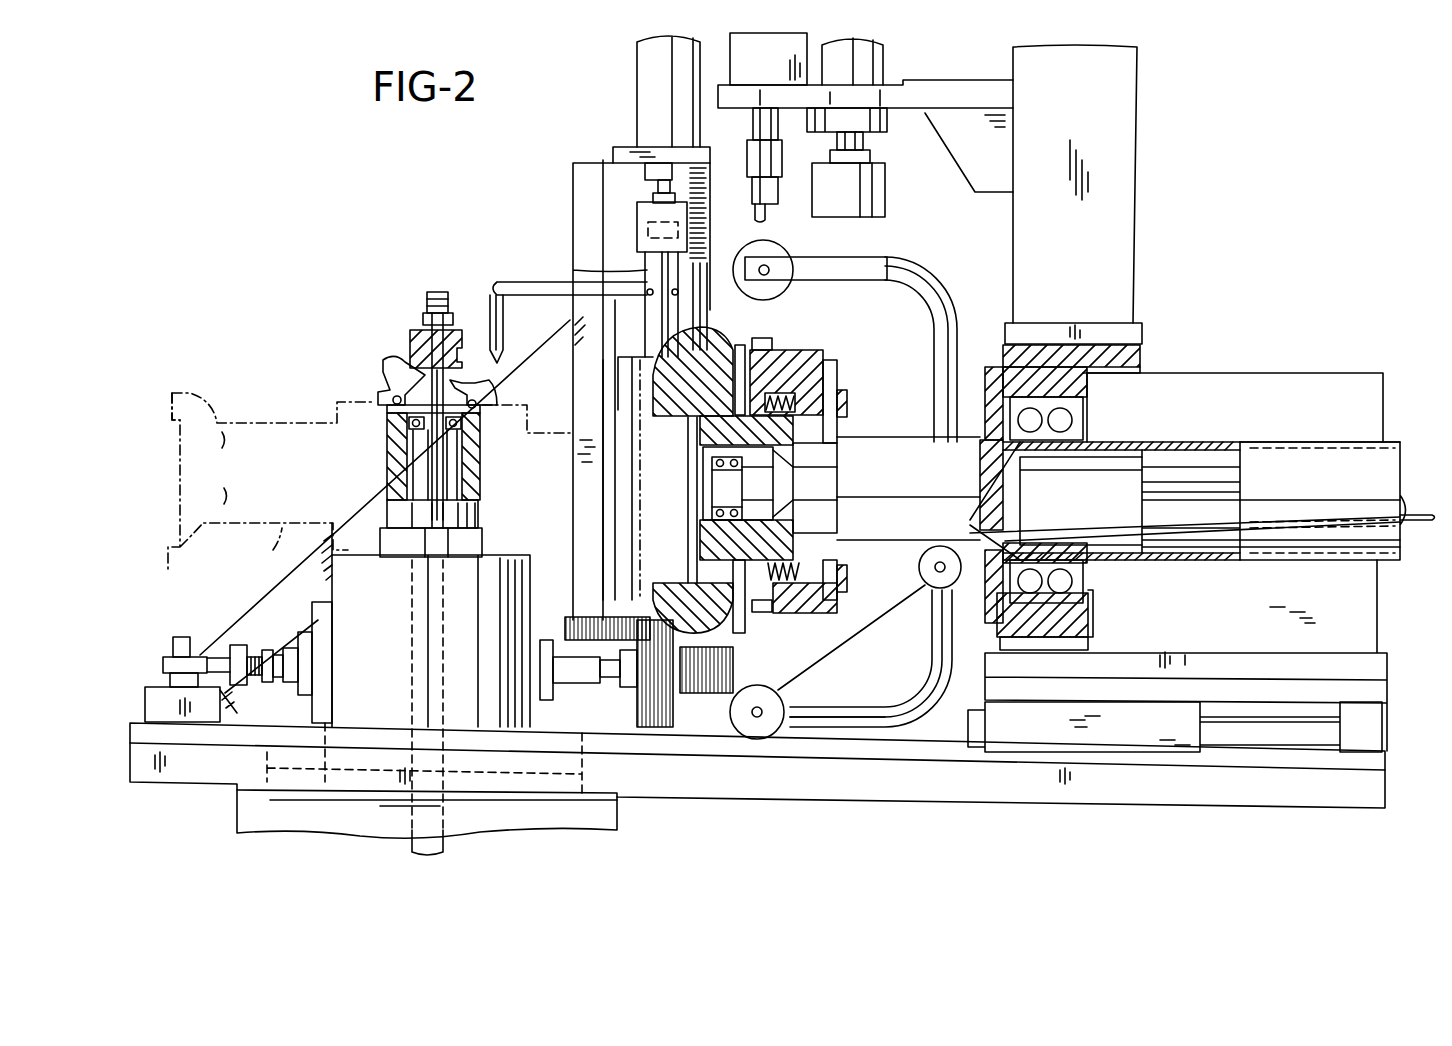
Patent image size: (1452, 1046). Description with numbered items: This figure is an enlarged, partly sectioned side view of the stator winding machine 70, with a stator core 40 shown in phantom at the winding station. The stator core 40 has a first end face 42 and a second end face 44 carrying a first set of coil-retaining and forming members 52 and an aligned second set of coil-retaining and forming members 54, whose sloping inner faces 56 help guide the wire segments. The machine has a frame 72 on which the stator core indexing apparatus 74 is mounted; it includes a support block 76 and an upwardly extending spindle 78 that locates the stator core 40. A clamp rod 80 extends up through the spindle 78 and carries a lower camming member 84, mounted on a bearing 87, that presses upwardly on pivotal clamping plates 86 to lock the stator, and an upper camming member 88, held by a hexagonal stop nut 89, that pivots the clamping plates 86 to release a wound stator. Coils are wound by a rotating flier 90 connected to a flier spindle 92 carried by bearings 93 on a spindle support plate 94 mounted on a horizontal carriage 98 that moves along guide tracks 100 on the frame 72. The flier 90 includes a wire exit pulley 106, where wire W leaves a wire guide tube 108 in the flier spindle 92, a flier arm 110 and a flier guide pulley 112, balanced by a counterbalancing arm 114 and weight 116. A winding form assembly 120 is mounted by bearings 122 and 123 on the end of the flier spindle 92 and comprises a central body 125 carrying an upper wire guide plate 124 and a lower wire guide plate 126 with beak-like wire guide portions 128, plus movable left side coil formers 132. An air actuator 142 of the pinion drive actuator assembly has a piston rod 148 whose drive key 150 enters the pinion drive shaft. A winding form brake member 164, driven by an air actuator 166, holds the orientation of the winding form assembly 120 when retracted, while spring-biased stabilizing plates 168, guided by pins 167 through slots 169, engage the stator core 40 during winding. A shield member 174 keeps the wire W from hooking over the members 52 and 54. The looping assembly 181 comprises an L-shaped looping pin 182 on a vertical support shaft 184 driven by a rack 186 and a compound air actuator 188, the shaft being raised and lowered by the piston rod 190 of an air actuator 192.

The stator core 40 is at (307, 400).
The first end face 42 is at (262, 420).
The second end face 44 is at (270, 552).
The first set of coil-retaining and forming members 52 is at (184, 378).
The second set of coil-retaining and forming members 54 is at (165, 575).
The inner faces 56 is at (218, 468).
The stator winding machine 70 is at (1170, 165).
The frame 72 is at (860, 793).
The stator core indexing apparatus 74 is at (258, 802).
The support block 76 is at (380, 613).
The spindle 78 is at (390, 470).
The clamp rod 80 is at (438, 290).
The lower camming member 84 is at (392, 428).
The pivotal clamping plates 86 is at (405, 380).
The bearing 87 is at (460, 430).
The upper camming member 88 is at (408, 333).
The hexagonal stop nut 89 is at (424, 316).
The flier 90 is at (919, 718).
The flier spindle 92 is at (970, 473).
The bearings 93 is at (1093, 398).
The spindle support plate 94 is at (1082, 616).
The carriage 98 is at (1350, 655).
The guide tracks 100 is at (1237, 737).
The wire exit pulley 106 is at (938, 546).
The wire guide tube 108 is at (1427, 527).
The flier arm 110 is at (832, 718).
The flier guide pulley 112 is at (757, 740).
The counterbalancing arm 114 is at (921, 273).
The weight 116 is at (775, 252).
The winding form assembly 120 is at (854, 309).
The bearing 122 is at (712, 480).
The bearing 123 is at (840, 450).
The upper wire guide plate 124 is at (853, 370).
The central body 125 is at (705, 445).
The lower wire guide plate 126 is at (840, 598).
The wire guide portions 128 is at (660, 363).
The left side coil formers 132 is at (670, 397).
The air actuator 142 is at (766, 66).
The piston rod 148 is at (753, 160).
The drive key 150 is at (755, 207).
The winding form brake member 164 is at (885, 182).
The air actuator 166 is at (880, 52).
The pins 167 is at (748, 345).
The stabilizing plates 168 is at (728, 360).
The slots 169 is at (758, 366).
The shield member 174 is at (600, 512).
The looping assembly 181 is at (570, 255).
The looping pin 182 is at (490, 290).
The support shaft 184 is at (620, 283).
The rack 186 is at (697, 685).
The compound air actuator 188 is at (322, 690).
The piston rod 190 is at (655, 183).
The air actuator 192 is at (637, 82).
The wire W is at (825, 662).